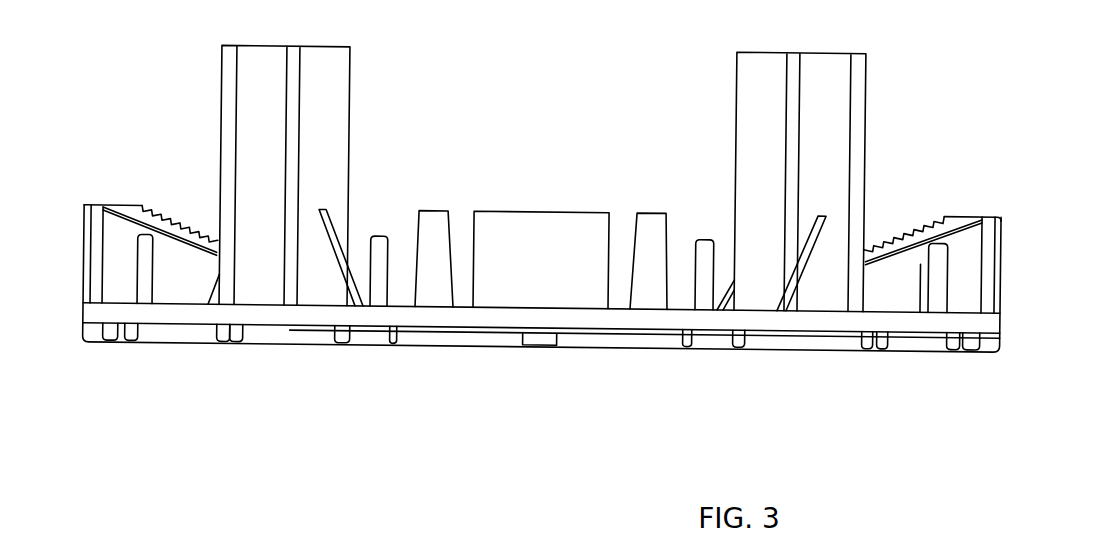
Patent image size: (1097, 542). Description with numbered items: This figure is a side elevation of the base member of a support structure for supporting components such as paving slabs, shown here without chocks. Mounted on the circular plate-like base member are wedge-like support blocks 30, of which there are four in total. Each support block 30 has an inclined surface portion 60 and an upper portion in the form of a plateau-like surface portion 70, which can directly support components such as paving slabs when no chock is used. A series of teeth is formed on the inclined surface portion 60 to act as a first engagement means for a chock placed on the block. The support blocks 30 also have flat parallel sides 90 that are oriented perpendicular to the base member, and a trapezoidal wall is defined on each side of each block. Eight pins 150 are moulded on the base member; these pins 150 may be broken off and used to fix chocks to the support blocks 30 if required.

The support block 30 is at (543, 285).
The inclined surface portion 60 is at (197, 242).
The plateau-like surface portion 70 is at (111, 211).
The flat parallel sides 90 is at (984, 260).
The pins 150 is at (938, 296).